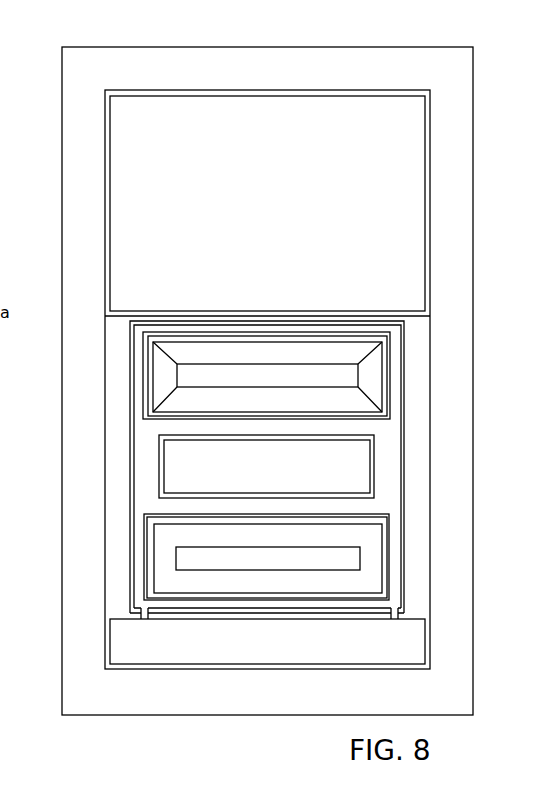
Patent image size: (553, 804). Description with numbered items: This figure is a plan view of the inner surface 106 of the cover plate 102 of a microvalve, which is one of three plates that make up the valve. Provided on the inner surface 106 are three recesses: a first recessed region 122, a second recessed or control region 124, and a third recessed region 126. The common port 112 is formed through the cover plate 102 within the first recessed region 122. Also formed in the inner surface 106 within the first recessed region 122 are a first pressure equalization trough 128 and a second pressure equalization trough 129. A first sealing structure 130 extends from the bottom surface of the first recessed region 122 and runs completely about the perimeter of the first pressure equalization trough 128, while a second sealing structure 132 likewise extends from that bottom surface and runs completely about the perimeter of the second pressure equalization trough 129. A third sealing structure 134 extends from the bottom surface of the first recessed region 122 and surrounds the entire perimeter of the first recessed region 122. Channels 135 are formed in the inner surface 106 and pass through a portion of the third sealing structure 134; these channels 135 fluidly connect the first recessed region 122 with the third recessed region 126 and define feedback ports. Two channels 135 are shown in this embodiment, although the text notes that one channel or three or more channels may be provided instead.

The cover plate 102 is at (93, 47).
The inner surface 106 is at (443, 71).
The common port 112 is at (355, 473).
The first recessed region 122 is at (122, 416).
The second recessed or control region 124 is at (122, 160).
The third recessed region 126 is at (123, 647).
The first pressure equalization trough 128 is at (367, 380).
The second pressure equalization trough 129 is at (367, 562).
The first sealing structure 130 is at (390, 410).
The second sealing structure 132 is at (390, 592).
The third sealing structure 134 is at (404, 333).
The channels 135 is at (144, 619).